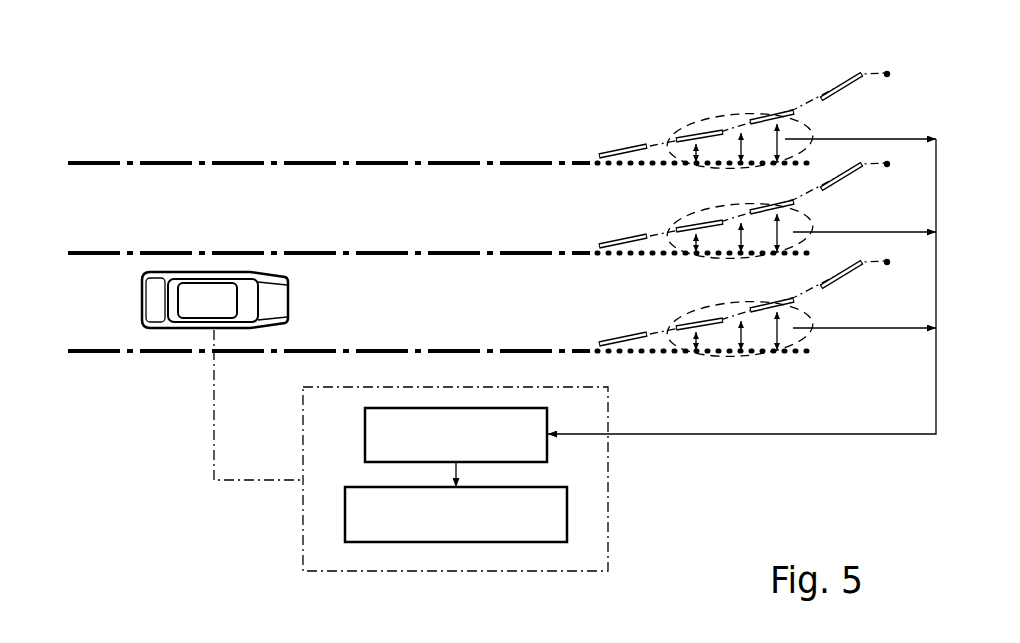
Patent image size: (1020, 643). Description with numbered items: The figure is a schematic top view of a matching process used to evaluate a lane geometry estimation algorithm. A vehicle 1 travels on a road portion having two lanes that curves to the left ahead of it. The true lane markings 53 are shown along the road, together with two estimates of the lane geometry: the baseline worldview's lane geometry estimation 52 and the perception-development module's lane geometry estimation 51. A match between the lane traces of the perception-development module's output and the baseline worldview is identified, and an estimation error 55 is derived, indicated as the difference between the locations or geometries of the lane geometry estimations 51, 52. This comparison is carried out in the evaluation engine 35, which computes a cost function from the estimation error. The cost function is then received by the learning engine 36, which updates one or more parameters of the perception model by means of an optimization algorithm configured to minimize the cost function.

The vehicle 1 is at (152, 328).
The evaluation engine 35 is at (548, 418).
The learning engine 36 is at (568, 528).
The perception-development module's lane geometry estimation 51 is at (636, 170).
The baseline worldview's lane geometry estimation 52 is at (872, 78).
The true lane markings 53 is at (776, 112).
The estimation error 55 is at (692, 122).